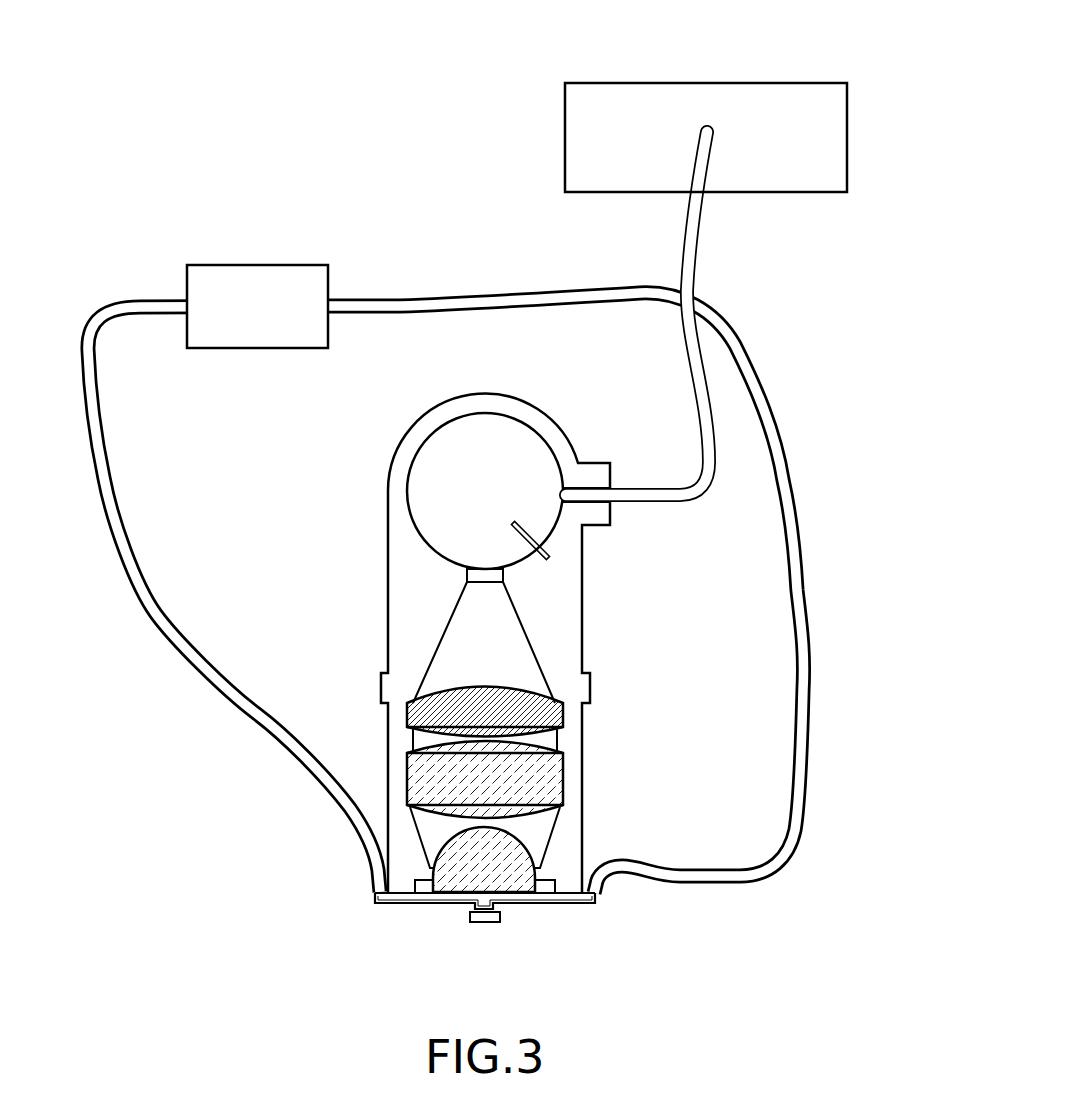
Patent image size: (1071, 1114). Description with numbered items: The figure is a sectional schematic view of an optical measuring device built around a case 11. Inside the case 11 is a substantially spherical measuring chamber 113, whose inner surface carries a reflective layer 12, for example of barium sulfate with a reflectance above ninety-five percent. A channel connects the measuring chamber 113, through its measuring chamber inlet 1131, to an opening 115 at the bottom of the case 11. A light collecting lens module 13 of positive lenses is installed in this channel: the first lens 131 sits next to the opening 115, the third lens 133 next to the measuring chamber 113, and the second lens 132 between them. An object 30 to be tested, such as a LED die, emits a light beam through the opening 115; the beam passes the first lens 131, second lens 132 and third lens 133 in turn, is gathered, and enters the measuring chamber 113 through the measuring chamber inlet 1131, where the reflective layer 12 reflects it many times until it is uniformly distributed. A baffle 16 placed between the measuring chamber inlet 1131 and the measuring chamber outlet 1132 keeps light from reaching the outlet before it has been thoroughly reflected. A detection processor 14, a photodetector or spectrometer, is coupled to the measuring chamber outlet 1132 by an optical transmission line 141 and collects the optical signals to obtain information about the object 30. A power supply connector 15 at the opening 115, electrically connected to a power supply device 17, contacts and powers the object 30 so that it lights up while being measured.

The case 11 is at (540, 512).
The reflective layer 12 is at (407, 473).
The measuring chamber 113 is at (467, 456).
The measuring chamber inlet 1131 is at (505, 576).
The measuring chamber outlet 1132 is at (583, 489).
The baffle 16 is at (530, 527).
The light collecting lens module 13 is at (570, 777).
The first lens 131 is at (517, 860).
The second lens 132 is at (565, 790).
The third lens 133 is at (530, 690).
The opening 115 is at (422, 893).
The power supply connector 15 is at (440, 900).
The object 30 is at (485, 922).
The detection processor 14 is at (800, 97).
The optical transmission line 141 is at (688, 243).
The power supply device 17 is at (222, 278).